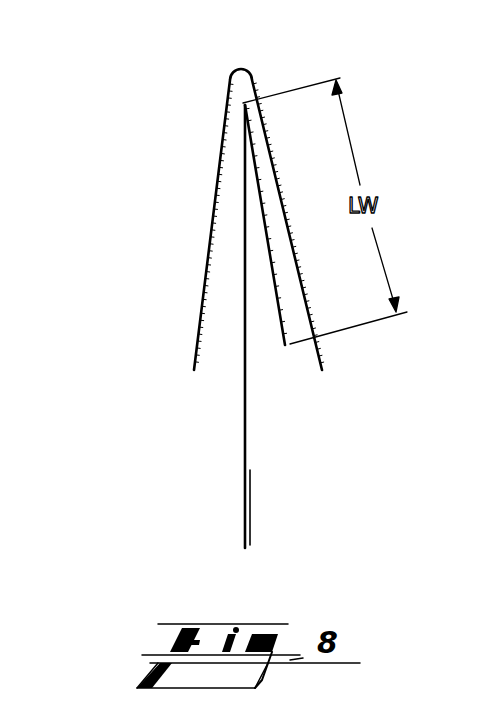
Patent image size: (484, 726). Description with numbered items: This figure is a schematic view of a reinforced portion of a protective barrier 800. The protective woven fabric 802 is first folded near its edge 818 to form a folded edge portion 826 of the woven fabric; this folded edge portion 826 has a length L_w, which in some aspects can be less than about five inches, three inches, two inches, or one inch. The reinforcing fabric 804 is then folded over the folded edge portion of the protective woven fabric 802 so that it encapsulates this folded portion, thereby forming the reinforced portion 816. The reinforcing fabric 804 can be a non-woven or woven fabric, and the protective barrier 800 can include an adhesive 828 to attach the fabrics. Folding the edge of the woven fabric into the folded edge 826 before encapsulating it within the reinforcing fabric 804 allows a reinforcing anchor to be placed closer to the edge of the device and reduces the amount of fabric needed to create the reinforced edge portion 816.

The protective barrier 800 is at (198, 453).
The protective woven fabric 802 is at (248, 493).
The reinforcing fabric 804 is at (195, 330).
The reinforced edge portion 816 is at (183, 237).
The edge 818 is at (293, 360).
The folded edge portion 826 is at (287, 298).
The adhesive 828 is at (198, 352).